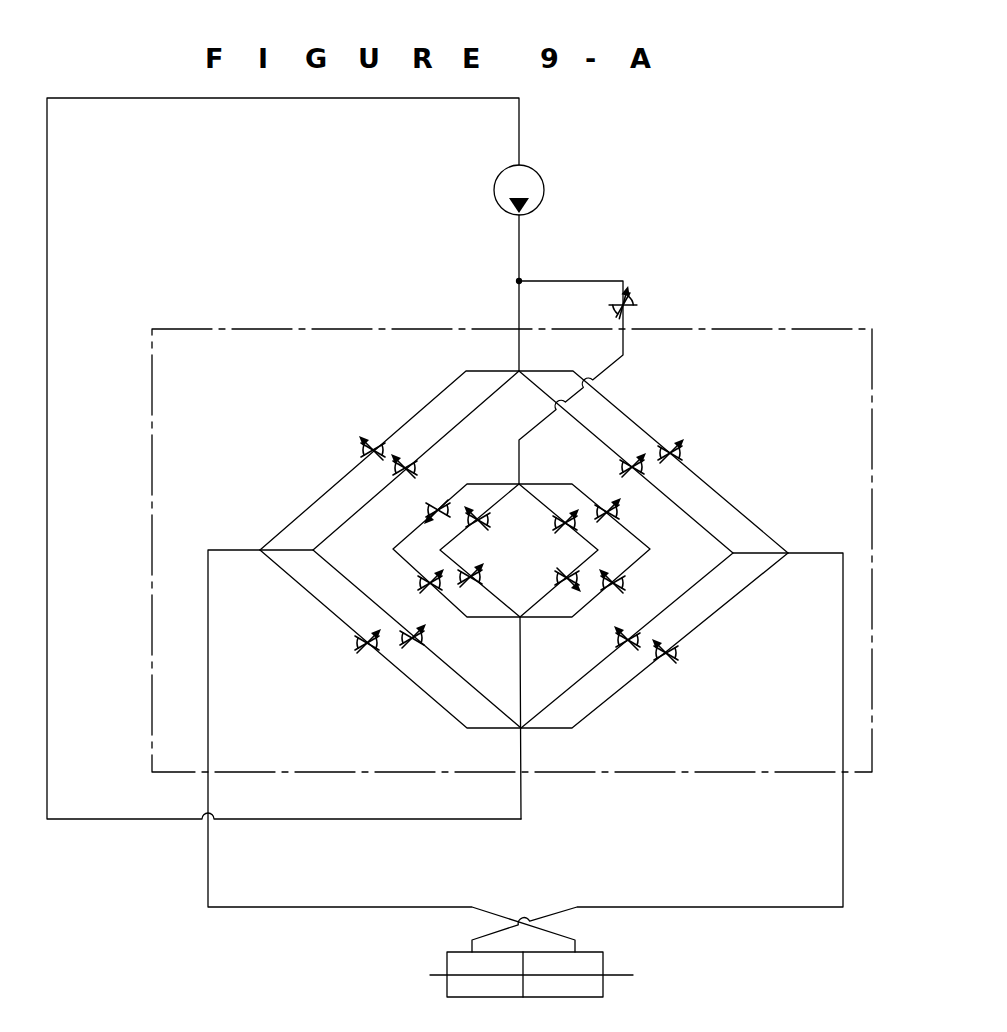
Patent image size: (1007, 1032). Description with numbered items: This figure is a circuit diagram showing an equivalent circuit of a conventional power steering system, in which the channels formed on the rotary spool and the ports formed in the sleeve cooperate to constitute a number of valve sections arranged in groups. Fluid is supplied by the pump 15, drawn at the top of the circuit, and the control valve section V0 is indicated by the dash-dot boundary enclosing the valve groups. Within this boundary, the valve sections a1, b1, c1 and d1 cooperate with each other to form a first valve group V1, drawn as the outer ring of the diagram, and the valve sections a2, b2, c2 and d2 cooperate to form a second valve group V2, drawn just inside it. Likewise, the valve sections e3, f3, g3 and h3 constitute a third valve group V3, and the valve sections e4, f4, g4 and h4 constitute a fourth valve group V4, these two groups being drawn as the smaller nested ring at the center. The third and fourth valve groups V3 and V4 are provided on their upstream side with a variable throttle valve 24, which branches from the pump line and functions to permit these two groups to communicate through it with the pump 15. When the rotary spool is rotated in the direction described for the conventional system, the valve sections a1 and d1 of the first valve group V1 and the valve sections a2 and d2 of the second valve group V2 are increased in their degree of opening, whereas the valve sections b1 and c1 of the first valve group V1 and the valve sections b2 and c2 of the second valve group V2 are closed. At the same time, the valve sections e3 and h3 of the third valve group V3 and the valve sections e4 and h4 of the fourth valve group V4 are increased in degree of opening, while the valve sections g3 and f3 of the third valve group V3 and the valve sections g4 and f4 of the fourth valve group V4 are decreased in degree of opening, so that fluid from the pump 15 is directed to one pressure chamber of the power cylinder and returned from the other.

The pump 15 is at (544, 190).
The variable throttle valve 24 is at (627, 296).
The control valve section V0 is at (723, 327).
The first valve group V1 is at (741, 505).
The second valve group V2 is at (658, 380).
The third valve group V3 is at (330, 460).
The fourth valve group V4 is at (443, 765).
The valve section a1 is at (680, 452).
The valve section a2 is at (633, 454).
The valve section b1 is at (372, 437).
The valve section b2 is at (406, 456).
The valve section c1 is at (665, 665).
The valve section c2 is at (625, 651).
The valve section d1 is at (368, 654).
The valve section d2 is at (413, 649).
The valve section e3 is at (438, 501).
The valve section e4 is at (486, 525).
The valve section f3 is at (617, 513).
The valve section f4 is at (565, 513).
The valve section g3 is at (421, 583).
The valve section g4 is at (482, 576).
The valve section h3 is at (625, 585).
The valve section h4 is at (557, 577).